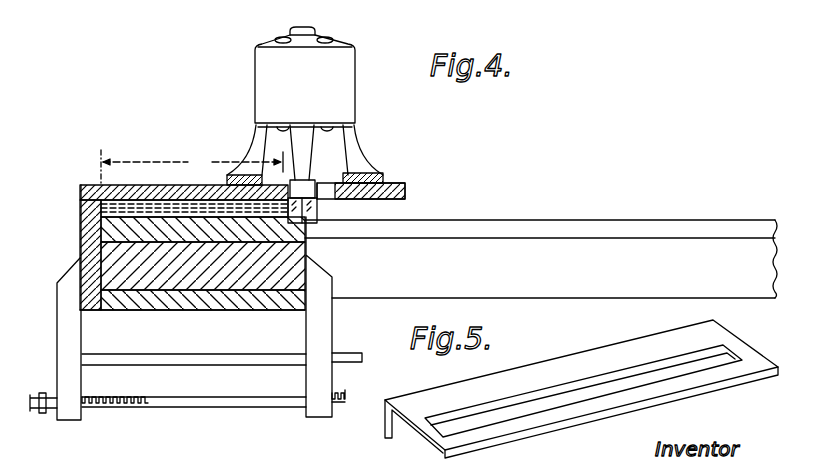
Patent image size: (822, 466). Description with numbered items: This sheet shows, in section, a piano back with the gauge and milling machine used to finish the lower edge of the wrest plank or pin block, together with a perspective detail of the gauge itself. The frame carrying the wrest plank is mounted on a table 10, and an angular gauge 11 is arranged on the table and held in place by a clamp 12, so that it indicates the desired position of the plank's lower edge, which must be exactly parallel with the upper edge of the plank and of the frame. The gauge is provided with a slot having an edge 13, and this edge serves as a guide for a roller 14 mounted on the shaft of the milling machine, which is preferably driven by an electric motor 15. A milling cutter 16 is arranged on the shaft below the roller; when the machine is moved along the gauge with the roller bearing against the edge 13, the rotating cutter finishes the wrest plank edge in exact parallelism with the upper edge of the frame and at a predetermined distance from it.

In FIG. 4, the table 10 is at (652, 228).
In FIG. 4, the angular gauge 11 is at (89, 189).
In FIG. 5, the angular gauge 11 is at (526, 371).
In FIG. 4, the clamp 12 is at (306, 335).
In FIG. 4, the slot edge 13 is at (290, 182).
In FIG. 5, the slot edge 13 is at (642, 372).
In FIG. 4, the roller 14 is at (312, 183).
In FIG. 4, the electric motor 15 is at (336, 93).
In FIG. 4, the milling cutter 16 is at (318, 218).